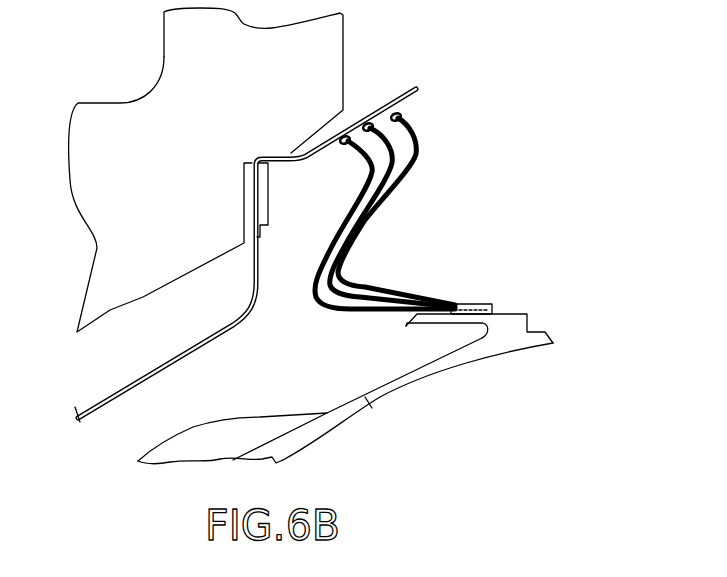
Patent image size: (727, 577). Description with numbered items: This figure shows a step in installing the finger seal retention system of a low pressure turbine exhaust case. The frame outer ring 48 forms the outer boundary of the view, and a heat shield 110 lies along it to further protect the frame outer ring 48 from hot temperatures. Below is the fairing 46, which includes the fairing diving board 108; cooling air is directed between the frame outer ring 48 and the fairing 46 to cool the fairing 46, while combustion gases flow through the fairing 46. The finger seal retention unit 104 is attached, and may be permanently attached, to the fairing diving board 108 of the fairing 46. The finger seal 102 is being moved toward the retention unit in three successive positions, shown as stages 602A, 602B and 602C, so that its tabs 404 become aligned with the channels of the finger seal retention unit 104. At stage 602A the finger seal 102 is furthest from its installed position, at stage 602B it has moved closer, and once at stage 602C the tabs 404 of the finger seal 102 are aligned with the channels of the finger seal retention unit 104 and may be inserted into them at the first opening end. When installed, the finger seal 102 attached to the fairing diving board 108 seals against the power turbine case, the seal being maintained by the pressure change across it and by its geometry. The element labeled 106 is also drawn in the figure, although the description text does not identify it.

The frame outer ring 48 is at (177, 37).
The heat shield 110 is at (399, 91).
The stage 602A is at (402, 145).
The stage 602B is at (412, 133).
The stage 602C is at (388, 187).
The tabs 404 is at (414, 293).
The finger seal retention unit 104 is at (484, 305).
The fairing diving board 108 is at (406, 325).
The flange 106 is at (500, 353).
The fairing 46 is at (472, 395).
The finger seal 102 is at (306, 264).